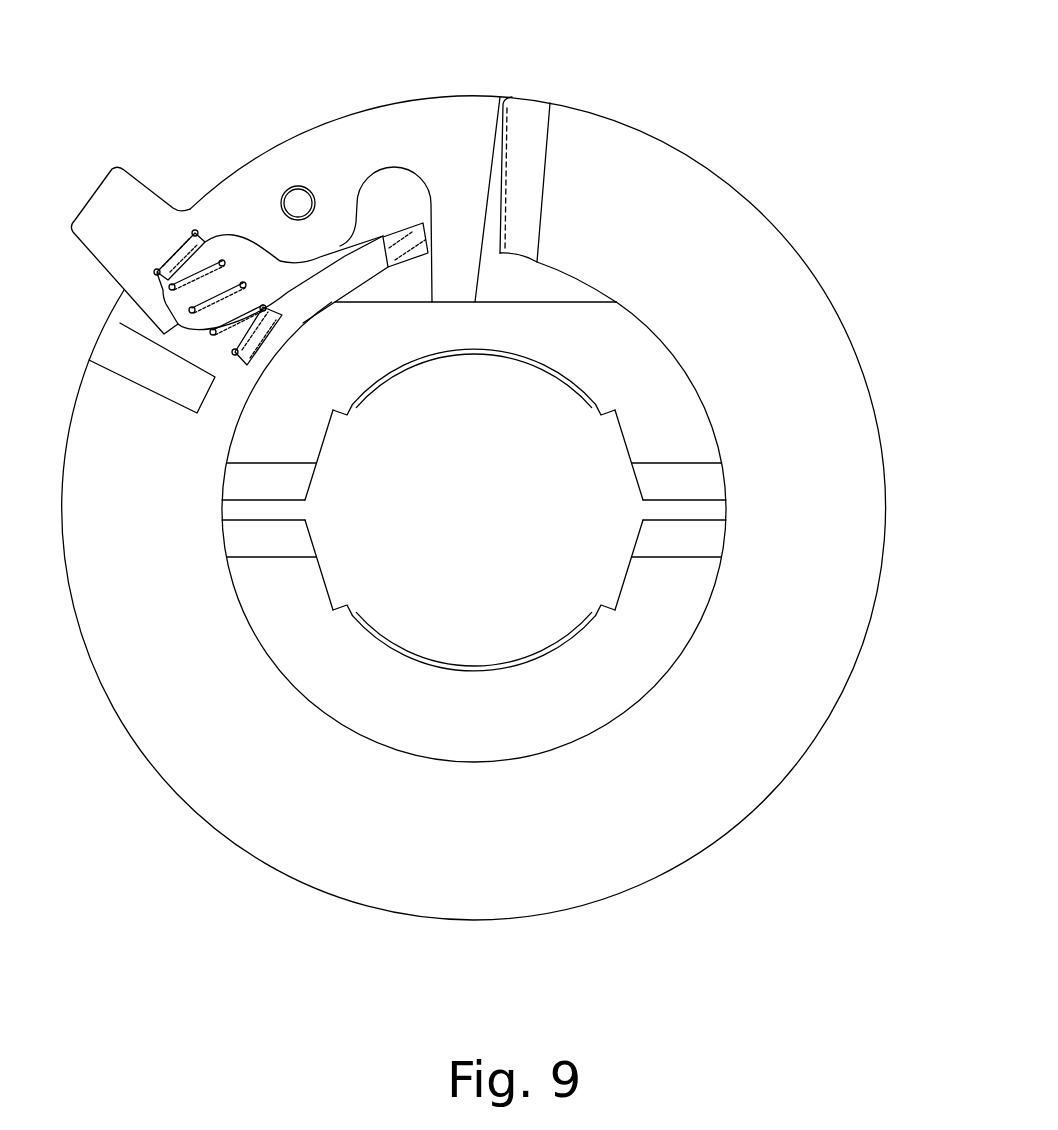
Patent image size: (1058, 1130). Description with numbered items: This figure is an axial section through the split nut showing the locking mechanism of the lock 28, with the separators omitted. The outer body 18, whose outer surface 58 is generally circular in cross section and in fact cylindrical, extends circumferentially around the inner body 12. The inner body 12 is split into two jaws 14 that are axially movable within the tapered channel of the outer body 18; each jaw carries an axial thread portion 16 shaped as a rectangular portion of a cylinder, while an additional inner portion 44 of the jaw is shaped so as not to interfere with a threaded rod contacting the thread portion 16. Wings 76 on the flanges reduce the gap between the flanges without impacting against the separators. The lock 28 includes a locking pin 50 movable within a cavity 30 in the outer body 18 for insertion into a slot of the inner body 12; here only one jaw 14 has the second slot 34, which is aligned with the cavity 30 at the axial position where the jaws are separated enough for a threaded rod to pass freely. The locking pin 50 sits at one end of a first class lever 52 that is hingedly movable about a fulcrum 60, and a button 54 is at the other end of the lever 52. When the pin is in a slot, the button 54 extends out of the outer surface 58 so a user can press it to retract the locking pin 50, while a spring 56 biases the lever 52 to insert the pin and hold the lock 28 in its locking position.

The inner body 12 is at (648, 370).
The jaw 14 is at (673, 598).
The axial thread portion 16 is at (495, 358).
The outer body 18 is at (297, 850).
The lock 28 is at (283, 193).
The first class lever 52 is at (273, 147).
The cavity 30 is at (385, 190).
The second slot 34 is at (545, 283).
The inner portion 44 is at (620, 438).
The locking pin 50 is at (505, 192).
The button 54 is at (93, 185).
The spring 56 is at (120, 323).
The outer surface 58 is at (155, 769).
The fulcrum 60 is at (303, 192).
The wing 76 is at (305, 530).